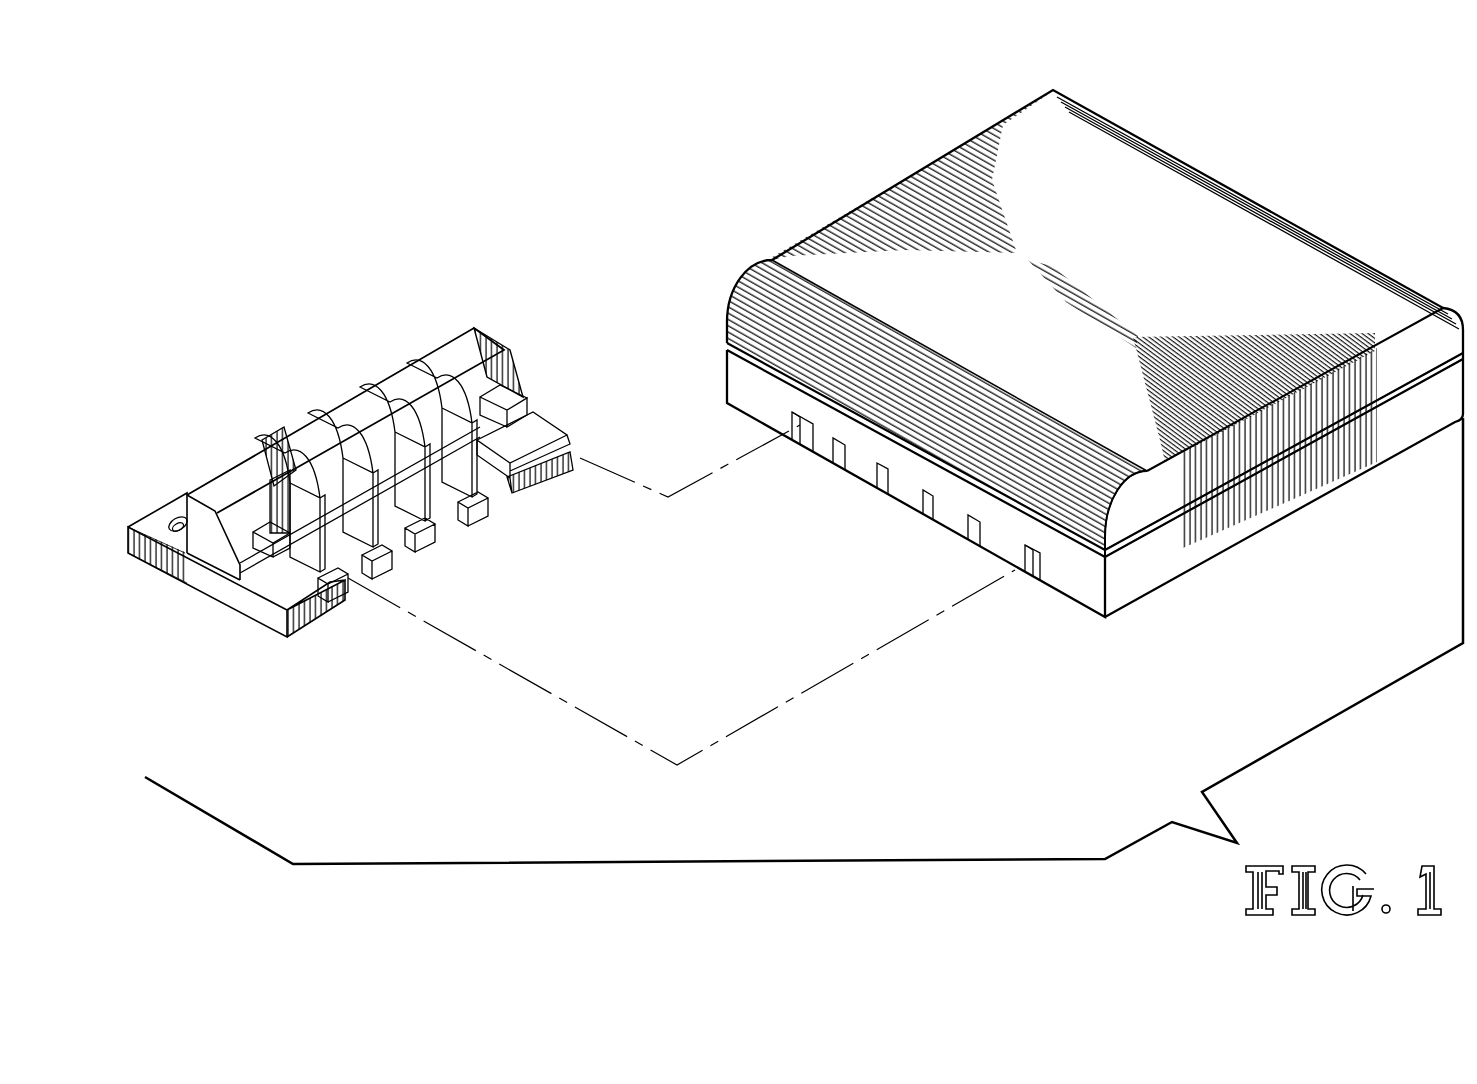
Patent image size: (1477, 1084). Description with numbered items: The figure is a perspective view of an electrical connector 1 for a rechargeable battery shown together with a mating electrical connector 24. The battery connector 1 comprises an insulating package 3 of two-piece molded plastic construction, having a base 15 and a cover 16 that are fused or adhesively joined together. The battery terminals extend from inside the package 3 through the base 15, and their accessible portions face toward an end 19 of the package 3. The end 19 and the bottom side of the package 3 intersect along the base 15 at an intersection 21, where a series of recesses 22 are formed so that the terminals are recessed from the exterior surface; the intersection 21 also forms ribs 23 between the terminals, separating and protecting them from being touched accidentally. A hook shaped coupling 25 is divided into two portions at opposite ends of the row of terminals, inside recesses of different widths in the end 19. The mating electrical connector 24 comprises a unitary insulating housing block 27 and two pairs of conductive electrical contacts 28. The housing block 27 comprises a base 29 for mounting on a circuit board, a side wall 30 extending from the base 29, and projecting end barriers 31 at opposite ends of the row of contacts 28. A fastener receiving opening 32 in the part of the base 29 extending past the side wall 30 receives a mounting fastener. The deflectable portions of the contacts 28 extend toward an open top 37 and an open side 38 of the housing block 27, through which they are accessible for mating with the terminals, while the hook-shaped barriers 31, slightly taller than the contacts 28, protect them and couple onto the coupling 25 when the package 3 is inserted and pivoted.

The electrical connector 1 is at (908, 255).
The insulating package 3 is at (1140, 500).
The base 15 is at (1425, 408).
The cover 16 is at (1378, 375).
The end 19 is at (752, 372).
The intersection 21 is at (1075, 612).
The recesses 22 is at (835, 462).
The ribs 23 is at (862, 482).
The mating electrical connector 24 is at (343, 418).
The hook shaped coupling 25 is at (798, 430).
The housing block 27 is at (218, 587).
The electrical contacts 28 is at (315, 512).
The base 29 is at (270, 612).
The side wall 30 is at (207, 535).
The end barriers 31 is at (250, 488).
The fastener receiving opening 32 is at (178, 518).
The open top 37 is at (472, 385).
The open side 38 is at (535, 440).